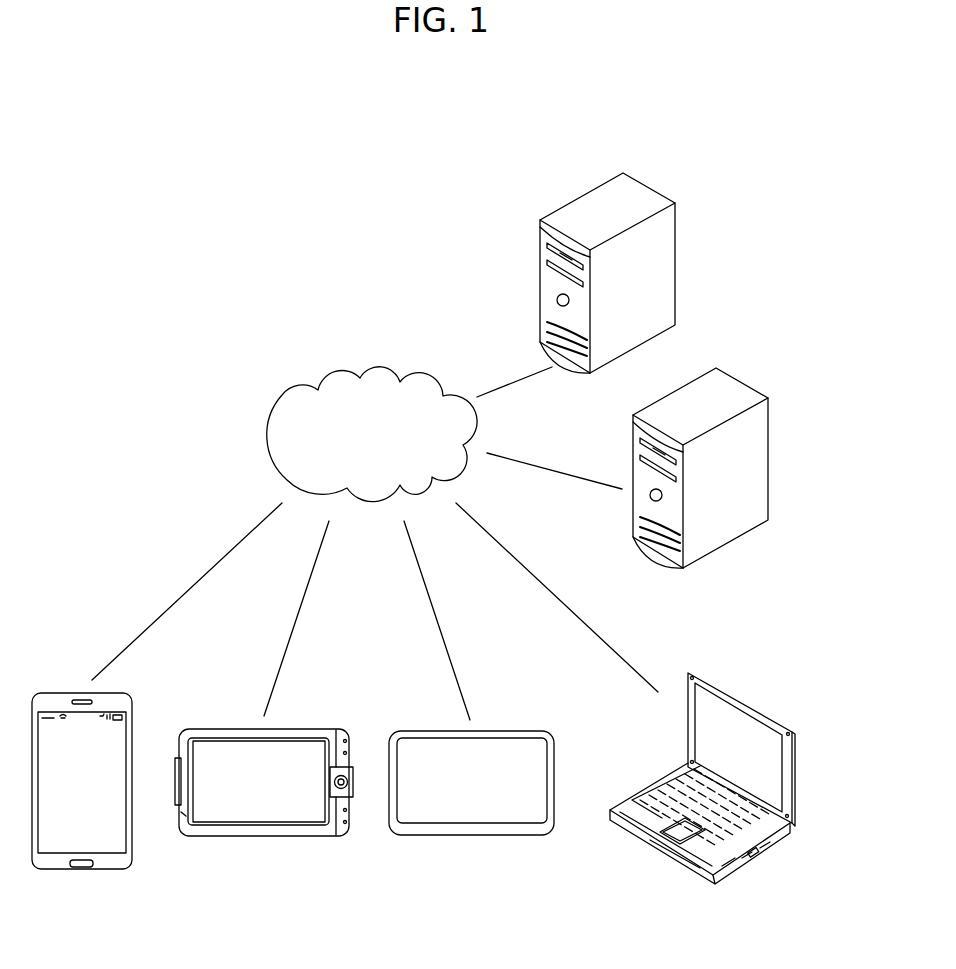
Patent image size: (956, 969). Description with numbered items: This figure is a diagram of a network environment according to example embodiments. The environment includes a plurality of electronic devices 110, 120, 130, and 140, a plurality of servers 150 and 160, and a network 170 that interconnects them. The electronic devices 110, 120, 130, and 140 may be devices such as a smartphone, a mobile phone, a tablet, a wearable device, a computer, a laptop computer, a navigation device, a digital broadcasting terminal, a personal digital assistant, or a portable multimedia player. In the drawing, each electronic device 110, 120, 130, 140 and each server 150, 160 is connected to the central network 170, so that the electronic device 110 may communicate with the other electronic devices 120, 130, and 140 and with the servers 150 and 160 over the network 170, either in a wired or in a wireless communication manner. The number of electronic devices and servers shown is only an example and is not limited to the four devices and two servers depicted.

The electronic device 110 is at (83, 870).
The electronic device 120 is at (264, 837).
The electronic device 130 is at (472, 837).
The electronic device 140 is at (794, 778).
The server 150 is at (769, 457).
The server 160 is at (676, 262).
The network 170 is at (376, 370).